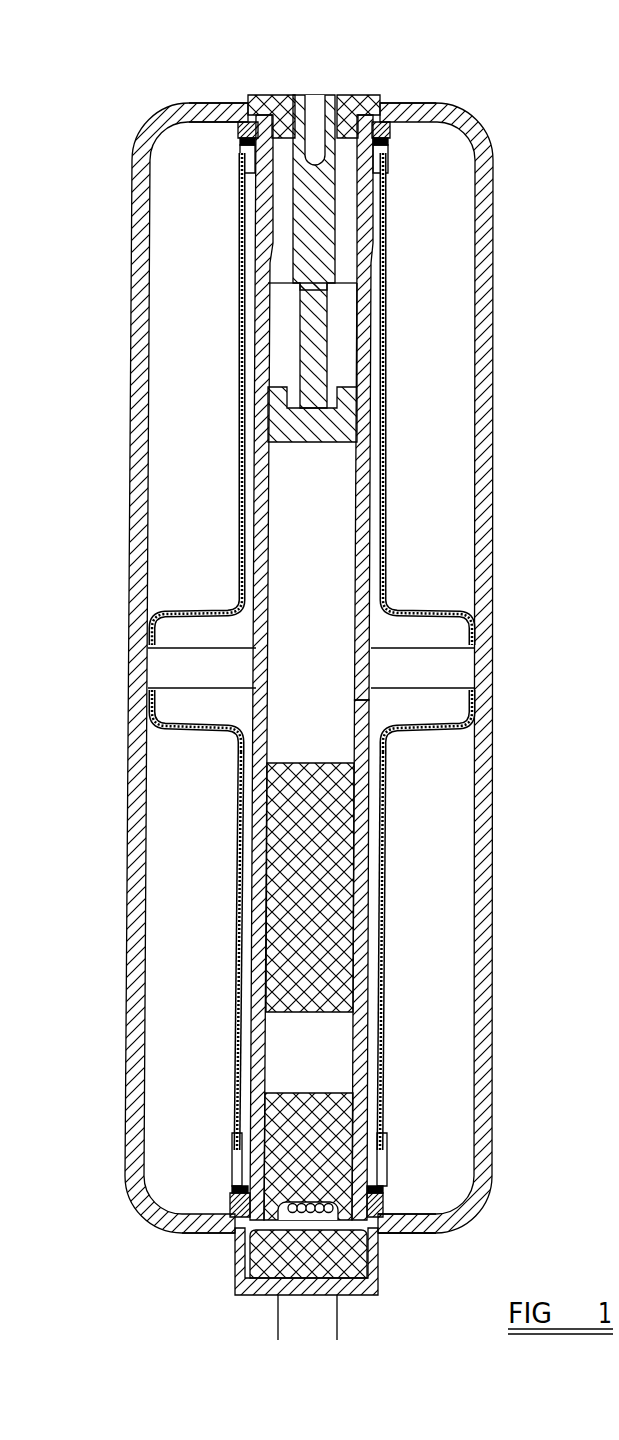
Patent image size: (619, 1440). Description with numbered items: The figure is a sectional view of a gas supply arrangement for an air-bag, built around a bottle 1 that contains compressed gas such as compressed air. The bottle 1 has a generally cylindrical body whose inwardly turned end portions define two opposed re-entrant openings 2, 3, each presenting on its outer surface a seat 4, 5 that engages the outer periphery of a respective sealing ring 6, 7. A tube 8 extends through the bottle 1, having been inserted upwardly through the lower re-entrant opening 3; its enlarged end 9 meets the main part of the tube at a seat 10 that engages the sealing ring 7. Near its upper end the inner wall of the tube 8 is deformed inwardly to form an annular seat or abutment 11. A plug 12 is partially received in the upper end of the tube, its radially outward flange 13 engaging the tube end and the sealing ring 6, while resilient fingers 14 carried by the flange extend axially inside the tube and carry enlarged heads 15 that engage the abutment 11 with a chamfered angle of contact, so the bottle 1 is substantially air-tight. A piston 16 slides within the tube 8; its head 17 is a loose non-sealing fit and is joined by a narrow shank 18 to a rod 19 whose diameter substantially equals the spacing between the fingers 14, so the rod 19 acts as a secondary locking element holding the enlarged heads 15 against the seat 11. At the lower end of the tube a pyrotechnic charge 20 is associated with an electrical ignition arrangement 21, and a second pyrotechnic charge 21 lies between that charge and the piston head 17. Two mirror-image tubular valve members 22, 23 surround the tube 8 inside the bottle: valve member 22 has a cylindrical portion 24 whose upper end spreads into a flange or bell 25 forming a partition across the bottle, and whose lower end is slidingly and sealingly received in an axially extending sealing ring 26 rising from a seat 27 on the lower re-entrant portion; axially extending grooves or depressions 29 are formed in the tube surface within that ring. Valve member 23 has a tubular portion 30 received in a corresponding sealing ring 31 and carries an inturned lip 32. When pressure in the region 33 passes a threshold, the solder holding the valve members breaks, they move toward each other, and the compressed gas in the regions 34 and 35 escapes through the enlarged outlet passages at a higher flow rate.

The bottle 1 is at (506, 1002).
The re-entrant opening 2 is at (403, 94).
The re-entrant opening 3 is at (401, 1268).
The seat 4 is at (227, 134).
The seat 5 is at (232, 1207).
The sealing ring 6 is at (240, 122).
The sealing ring 7 is at (236, 1213).
The tube 8 is at (367, 640).
The enlarged end 9 is at (380, 1275).
The seat 10 is at (393, 1233).
The annular seat or abutment 11 is at (348, 264).
The plug 12 is at (372, 94).
The flange 13 is at (266, 95).
The resilient fingers 14 is at (362, 232).
The enlarged heads 15 is at (352, 302).
The piston 16 is at (345, 351).
The head 17 is at (352, 410).
The shank 18 is at (300, 323).
The rod 19 is at (293, 195).
The pyrotechnic charge 20 is at (307, 1152).
The electrical ignition arrangement / second pyrotechnic charge 21 is at (310, 935).
The valve member 22 is at (384, 808).
The valve member 23 is at (386, 531).
The cylindrical portion 24 is at (384, 872).
The flange or bell 25 is at (438, 740).
The sealing ring 26 is at (233, 1146).
The seat 27 is at (222, 1203).
The grooves or depressions 29 is at (576, 738).
The tubular portion 30 is at (386, 497).
The sealing ring 31 is at (390, 203).
The inturned lip 32 is at (384, 150).
The region 33 is at (187, 674).
The region 34 is at (196, 484).
The region 35 is at (173, 890).